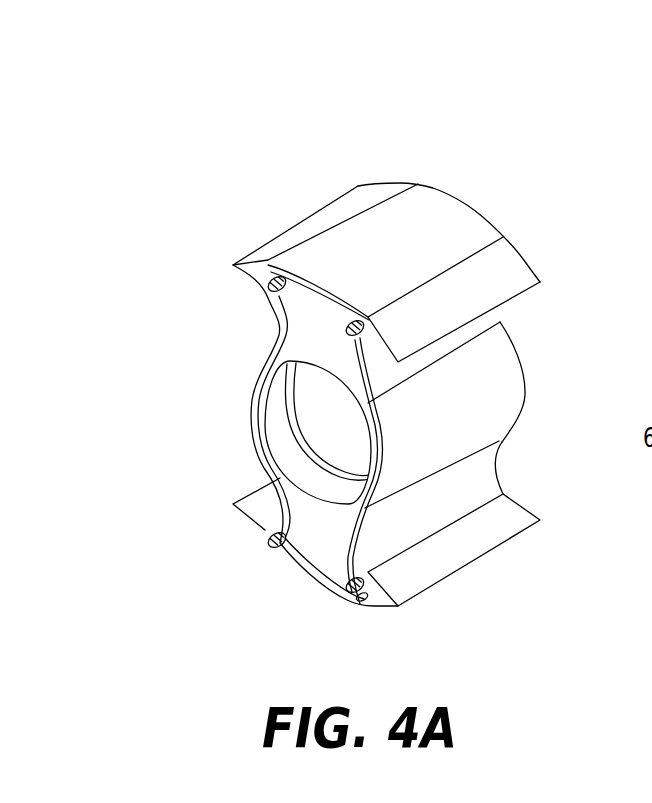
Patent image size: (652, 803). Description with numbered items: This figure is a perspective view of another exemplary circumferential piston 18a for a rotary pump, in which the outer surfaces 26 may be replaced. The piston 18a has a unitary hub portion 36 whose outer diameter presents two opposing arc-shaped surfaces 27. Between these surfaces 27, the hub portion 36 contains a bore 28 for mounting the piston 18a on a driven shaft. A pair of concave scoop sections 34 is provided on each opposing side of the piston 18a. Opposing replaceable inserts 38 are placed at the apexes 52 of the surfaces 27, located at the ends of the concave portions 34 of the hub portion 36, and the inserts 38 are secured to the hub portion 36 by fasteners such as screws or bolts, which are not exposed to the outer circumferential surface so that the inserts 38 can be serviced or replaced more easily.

The piston 18a is at (383, 100).
The surfaces 26 is at (340, 147).
The opposing surfaces 27 is at (446, 210).
The bore 28 is at (278, 415).
The concave scoop sections 34 is at (493, 313).
The hub portion 36 is at (540, 403).
The replaceable inserts 38 is at (515, 261).
The apexes 52 is at (410, 183).